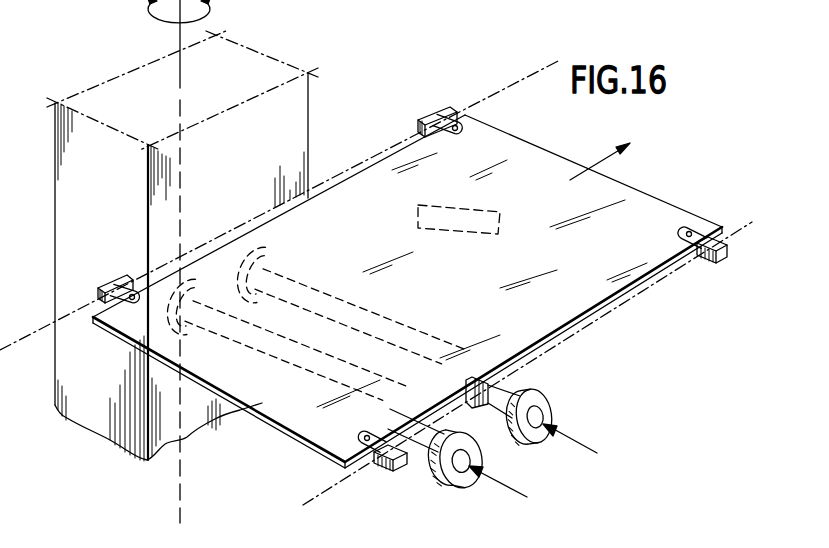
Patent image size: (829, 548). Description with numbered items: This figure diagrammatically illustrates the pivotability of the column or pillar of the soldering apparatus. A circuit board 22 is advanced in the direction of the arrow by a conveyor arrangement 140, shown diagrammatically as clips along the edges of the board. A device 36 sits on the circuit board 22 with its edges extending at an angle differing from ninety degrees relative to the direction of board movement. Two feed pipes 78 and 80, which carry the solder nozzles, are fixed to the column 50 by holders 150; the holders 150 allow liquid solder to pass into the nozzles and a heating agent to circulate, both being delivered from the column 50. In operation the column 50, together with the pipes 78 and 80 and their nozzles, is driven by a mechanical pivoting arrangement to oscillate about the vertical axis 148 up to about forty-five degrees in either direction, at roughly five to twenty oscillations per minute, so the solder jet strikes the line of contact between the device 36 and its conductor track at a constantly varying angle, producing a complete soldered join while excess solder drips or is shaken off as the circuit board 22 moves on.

The circuit board 22 is at (640, 203).
The device 36 is at (482, 218).
The column 50 is at (284, 131).
The feed pipe 78 is at (427, 447).
The feed pipe 80 is at (517, 384).
The conveyor arrangement 140 is at (704, 263).
The vertical axis 148 is at (180, 37).
The holder 150 is at (197, 281).